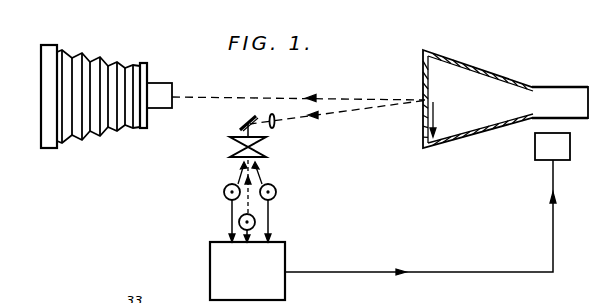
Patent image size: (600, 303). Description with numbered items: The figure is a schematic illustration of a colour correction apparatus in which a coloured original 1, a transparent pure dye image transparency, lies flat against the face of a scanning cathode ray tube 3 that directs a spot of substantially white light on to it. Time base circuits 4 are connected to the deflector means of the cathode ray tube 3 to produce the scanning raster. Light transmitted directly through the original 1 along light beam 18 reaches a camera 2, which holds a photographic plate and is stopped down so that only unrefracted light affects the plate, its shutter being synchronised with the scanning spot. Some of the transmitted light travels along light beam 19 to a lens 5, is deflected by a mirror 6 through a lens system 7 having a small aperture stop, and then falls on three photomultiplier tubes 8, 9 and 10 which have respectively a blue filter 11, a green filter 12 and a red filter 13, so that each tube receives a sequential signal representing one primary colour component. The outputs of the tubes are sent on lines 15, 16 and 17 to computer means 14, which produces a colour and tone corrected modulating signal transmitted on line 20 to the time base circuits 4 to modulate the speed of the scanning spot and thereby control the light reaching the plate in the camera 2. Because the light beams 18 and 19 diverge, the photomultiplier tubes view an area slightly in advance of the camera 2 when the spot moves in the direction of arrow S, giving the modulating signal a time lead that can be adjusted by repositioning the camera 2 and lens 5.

The coloured original 1 is at (437, 67).
The camera 2 is at (106, 65).
The scanning cathode ray tube 3 is at (480, 111).
The time base circuits 4 is at (560, 156).
The lens 5 is at (275, 124).
The mirror 6 is at (243, 125).
The lens system 7 is at (233, 145).
The photomultiplier tube 8 is at (224, 192).
The photomultiplier tube 9 is at (239, 222).
The photomultiplier tube 10 is at (276, 192).
The blue filter 11 is at (241, 182).
The green filter 12 is at (246, 212).
The red filter 13 is at (258, 183).
The computer means 14 is at (252, 282).
The line 15 is at (240, 228).
The line 16 is at (259, 233).
The line 17 is at (283, 243).
The light beam 18 is at (298, 98).
The light beam 19 is at (367, 110).
The line 20 is at (452, 274).